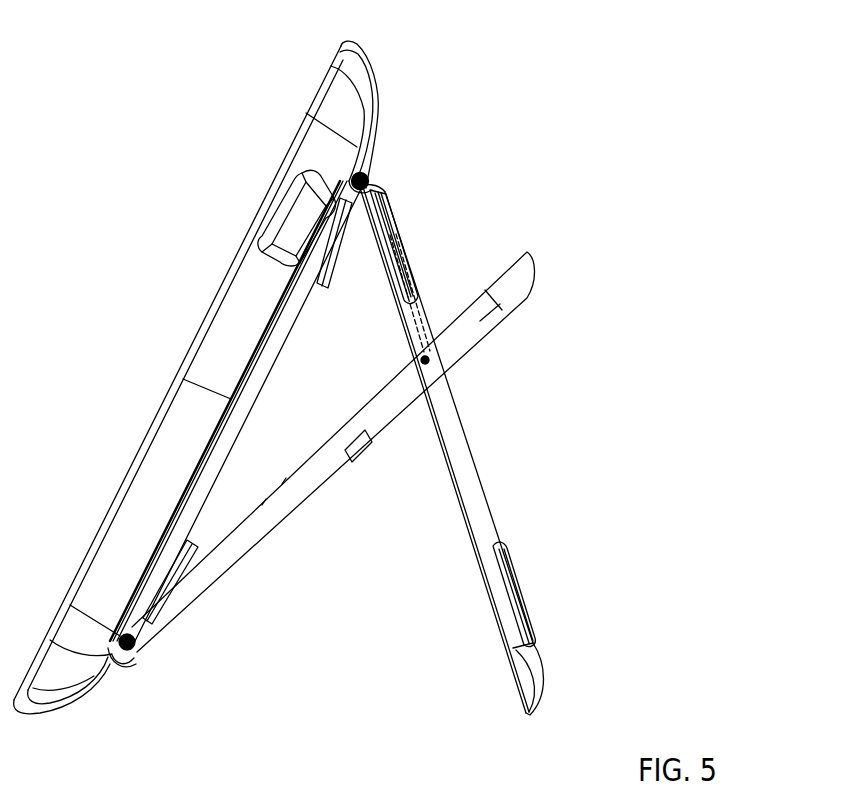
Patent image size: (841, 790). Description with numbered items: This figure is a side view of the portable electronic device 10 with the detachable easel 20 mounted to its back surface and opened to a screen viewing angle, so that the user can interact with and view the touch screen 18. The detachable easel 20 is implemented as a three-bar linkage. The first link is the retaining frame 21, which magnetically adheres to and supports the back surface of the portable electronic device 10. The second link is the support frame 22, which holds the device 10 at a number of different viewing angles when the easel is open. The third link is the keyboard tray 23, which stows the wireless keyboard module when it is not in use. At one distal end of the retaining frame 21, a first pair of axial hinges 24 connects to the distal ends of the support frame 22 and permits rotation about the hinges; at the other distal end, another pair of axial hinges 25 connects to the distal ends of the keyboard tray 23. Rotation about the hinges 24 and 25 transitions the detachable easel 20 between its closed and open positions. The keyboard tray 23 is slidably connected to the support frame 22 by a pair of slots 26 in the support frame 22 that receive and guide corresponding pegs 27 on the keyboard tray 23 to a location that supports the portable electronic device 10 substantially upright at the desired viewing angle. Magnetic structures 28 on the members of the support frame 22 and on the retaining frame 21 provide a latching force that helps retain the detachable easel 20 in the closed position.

The portable electronic device 10 is at (352, 43).
The touch screen 18 is at (180, 352).
The detachable easel 20 is at (494, 46).
The retaining frame 21 is at (278, 361).
The support frame 22 is at (462, 541).
The keyboard tray 23 is at (530, 251).
The first pair of axial hinges 24 is at (370, 178).
The second pair of axial hinges 25 is at (137, 647).
The slots 26 is at (426, 290).
The pegs 27 is at (432, 360).
The magnetic structures 28 is at (328, 277).